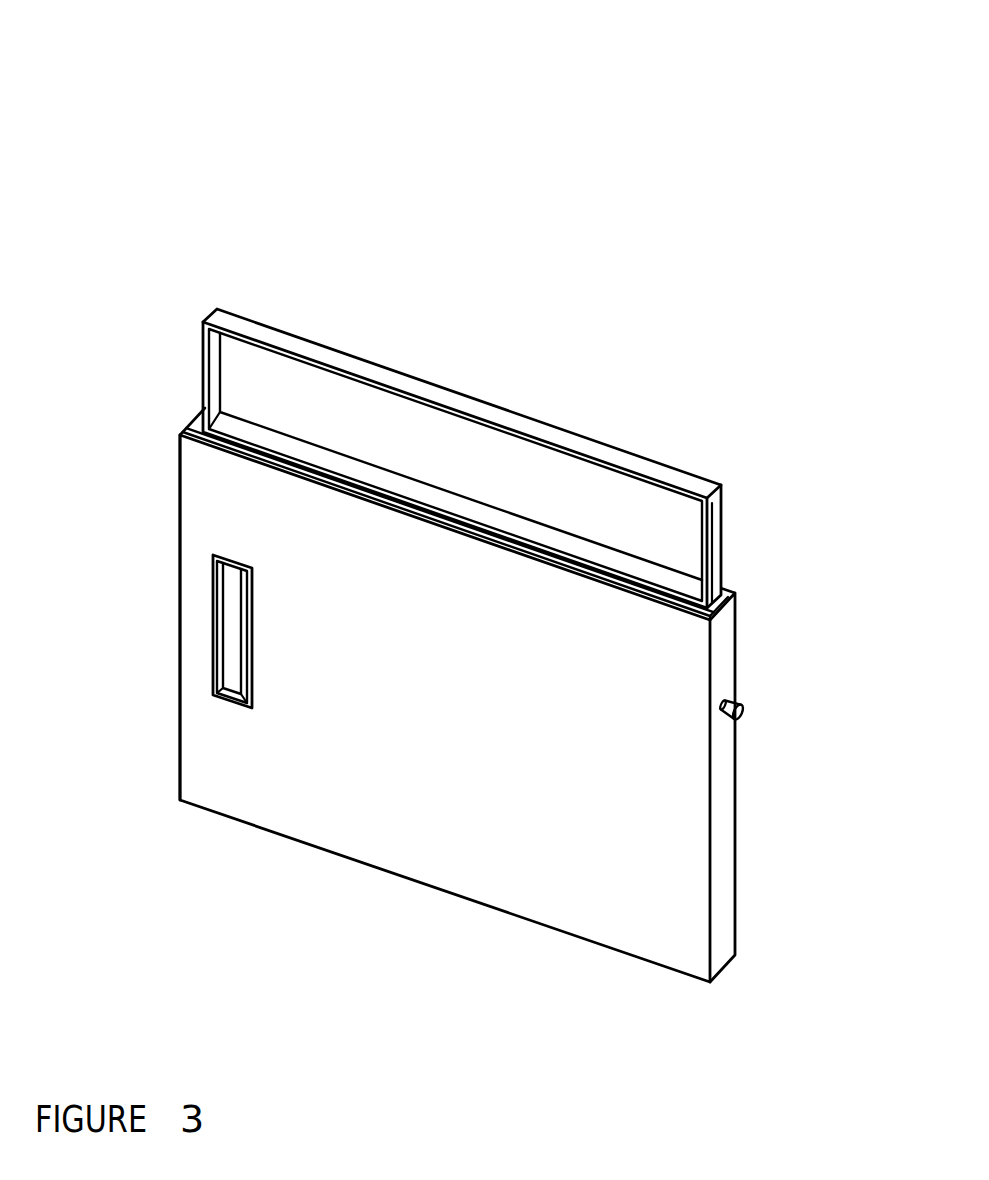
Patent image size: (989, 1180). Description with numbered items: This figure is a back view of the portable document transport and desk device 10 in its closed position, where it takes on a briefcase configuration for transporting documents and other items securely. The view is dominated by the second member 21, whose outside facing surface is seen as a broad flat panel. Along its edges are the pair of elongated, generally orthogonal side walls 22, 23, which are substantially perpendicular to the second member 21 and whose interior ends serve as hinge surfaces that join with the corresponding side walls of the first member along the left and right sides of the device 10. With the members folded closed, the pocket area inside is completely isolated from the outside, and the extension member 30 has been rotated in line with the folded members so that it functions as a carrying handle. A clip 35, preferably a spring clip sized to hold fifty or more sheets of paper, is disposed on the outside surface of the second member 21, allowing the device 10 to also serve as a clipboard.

The portable document transport and desk device 10 is at (174, 182).
The second member 21 is at (470, 698).
The side wall 22 is at (178, 620).
The side wall 23 is at (733, 837).
The extension member 30 is at (470, 392).
The clip 35 is at (215, 698).